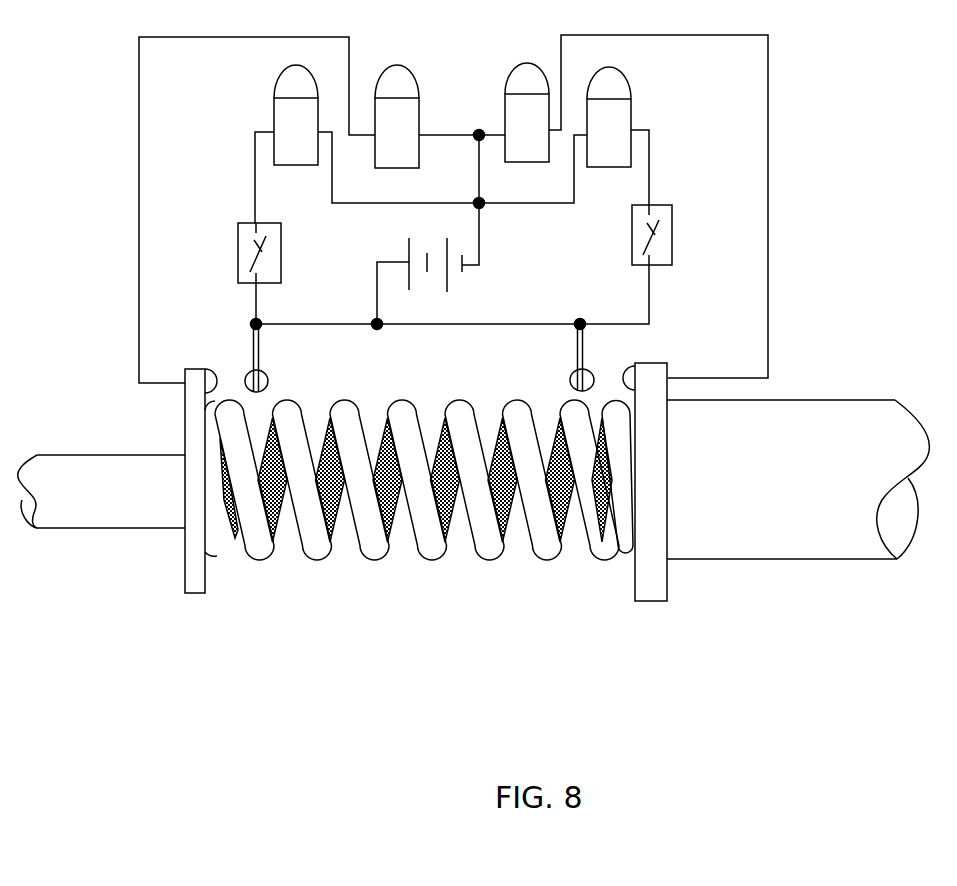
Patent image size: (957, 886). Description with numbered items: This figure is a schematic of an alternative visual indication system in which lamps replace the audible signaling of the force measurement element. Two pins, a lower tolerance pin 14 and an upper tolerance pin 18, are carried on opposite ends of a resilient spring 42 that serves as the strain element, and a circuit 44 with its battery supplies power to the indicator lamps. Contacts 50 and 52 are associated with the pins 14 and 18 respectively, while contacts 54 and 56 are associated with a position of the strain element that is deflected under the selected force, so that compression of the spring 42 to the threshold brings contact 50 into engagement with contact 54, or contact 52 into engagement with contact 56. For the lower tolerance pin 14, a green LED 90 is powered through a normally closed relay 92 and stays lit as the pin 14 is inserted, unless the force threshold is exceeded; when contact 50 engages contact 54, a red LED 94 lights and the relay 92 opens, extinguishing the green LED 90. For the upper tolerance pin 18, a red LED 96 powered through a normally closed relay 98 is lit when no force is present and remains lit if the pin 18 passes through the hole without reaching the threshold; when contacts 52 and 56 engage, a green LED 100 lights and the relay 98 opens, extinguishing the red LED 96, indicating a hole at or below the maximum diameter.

The pin 14 is at (63, 528).
The pin 18 is at (715, 559).
The spring 42 is at (372, 560).
The sound circuit 44 is at (447, 292).
The contact 50 is at (213, 372).
The contact 52 is at (625, 377).
The contact 54 is at (245, 383).
The contact 56 is at (593, 379).
The green LED 90 is at (275, 117).
The NC relay 92 is at (282, 253).
The red LED 94 is at (418, 112).
The red LED 96 is at (627, 115).
The NC relay 98 is at (673, 227).
The green LED 100 is at (506, 110).